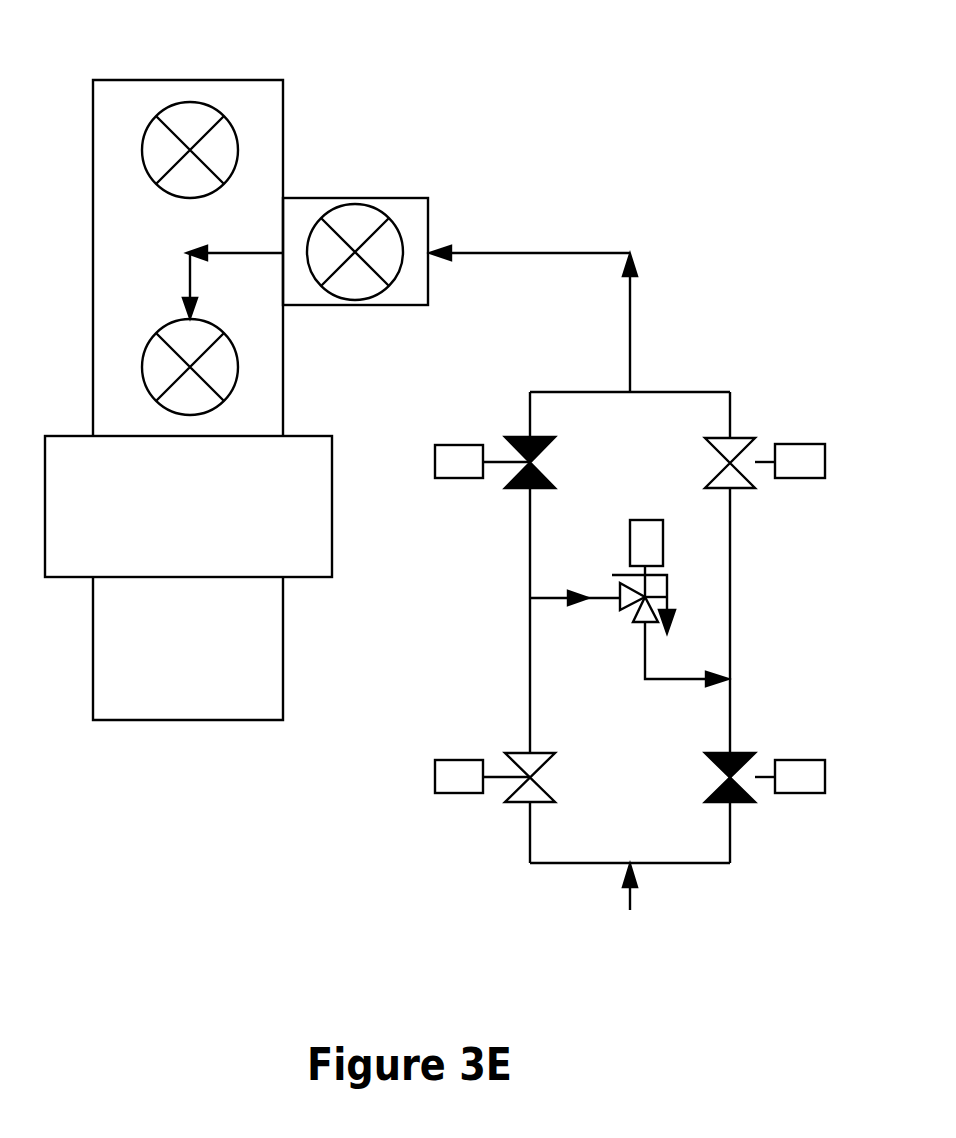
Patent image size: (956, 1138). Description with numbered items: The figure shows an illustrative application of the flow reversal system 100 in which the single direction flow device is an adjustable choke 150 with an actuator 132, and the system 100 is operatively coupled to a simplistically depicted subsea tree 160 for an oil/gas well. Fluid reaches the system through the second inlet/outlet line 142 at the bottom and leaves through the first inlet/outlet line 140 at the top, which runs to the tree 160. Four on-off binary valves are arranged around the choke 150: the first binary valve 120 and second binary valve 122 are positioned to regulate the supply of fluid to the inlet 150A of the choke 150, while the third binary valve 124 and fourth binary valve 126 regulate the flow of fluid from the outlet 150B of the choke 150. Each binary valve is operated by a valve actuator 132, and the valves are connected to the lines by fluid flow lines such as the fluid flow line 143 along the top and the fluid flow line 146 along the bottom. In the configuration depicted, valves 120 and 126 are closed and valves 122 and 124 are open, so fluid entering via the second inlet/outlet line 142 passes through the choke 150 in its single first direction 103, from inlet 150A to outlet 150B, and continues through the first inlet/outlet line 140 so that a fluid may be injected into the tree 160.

The flow reversal system 100 is at (735, 298).
The first direction 103 is at (667, 596).
The first binary valve 120 is at (485, 427).
The second binary valve 122 is at (483, 823).
The third binary valve 124 is at (788, 428).
The fourth binary valve 126 is at (757, 808).
The valve actuator 132 is at (642, 535).
The first inlet/outlet line 140 is at (632, 377).
The second inlet/outlet line 142 is at (633, 892).
The fluid flow line 143 is at (677, 388).
The fluid flow line 146 is at (708, 865).
The adjustable choke 150 is at (623, 615).
The inlet 150A is at (598, 593).
The outlet 150B is at (647, 640).
The subsea tree 160 is at (360, 107).